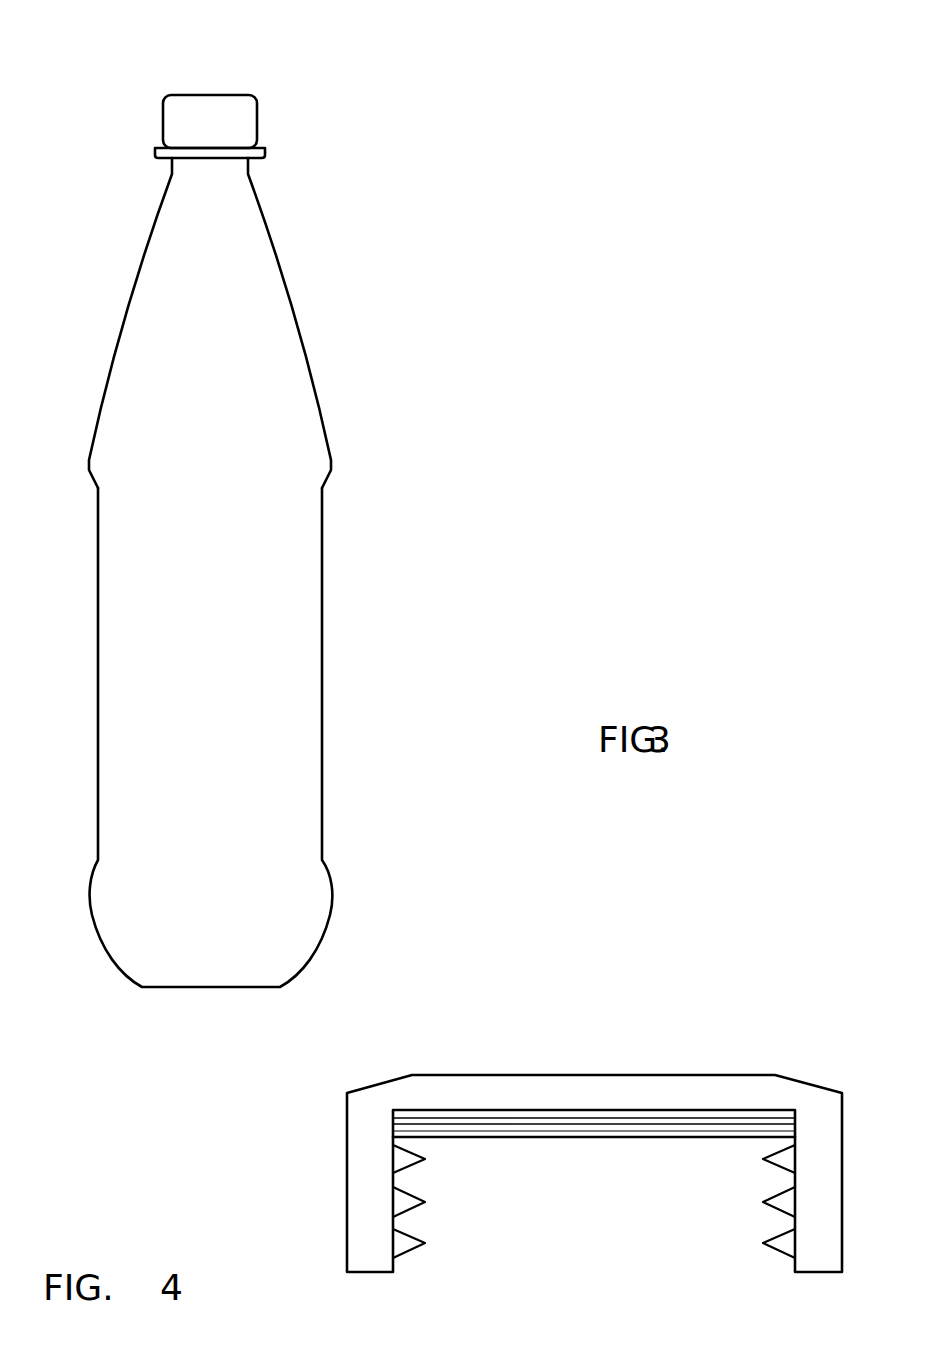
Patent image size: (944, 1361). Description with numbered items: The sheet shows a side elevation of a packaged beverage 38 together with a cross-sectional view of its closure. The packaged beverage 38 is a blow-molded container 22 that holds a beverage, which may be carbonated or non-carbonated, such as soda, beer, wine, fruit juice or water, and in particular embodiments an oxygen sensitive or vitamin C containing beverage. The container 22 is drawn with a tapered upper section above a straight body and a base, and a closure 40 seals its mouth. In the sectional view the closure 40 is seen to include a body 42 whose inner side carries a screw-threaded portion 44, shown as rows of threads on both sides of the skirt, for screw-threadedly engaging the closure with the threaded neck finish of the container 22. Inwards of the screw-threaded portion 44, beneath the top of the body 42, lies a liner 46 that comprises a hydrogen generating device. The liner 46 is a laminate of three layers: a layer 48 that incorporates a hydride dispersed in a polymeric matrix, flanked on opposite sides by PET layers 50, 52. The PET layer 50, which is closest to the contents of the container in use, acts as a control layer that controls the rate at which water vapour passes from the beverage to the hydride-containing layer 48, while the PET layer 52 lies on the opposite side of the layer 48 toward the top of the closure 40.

In FIG. 3, the container 22 is at (326, 603).
In FIG. 3, the packaged beverage 38 is at (327, 408).
In FIG. 3, the closure 40 is at (210, 95).
In FIG. 4, the closure 40 is at (343, 1143).
In FIG. 4, the body 42 is at (368, 1204).
In FIG. 4, the screw-threaded portion 44 is at (425, 1243).
In FIG. 4, the liner 46 is at (594, 1090).
In FIG. 4, the layer 48 is at (675, 1124).
In FIG. 4, the PET layer 50 is at (584, 1132).
In FIG. 4, the PET layer 52 is at (550, 1114).